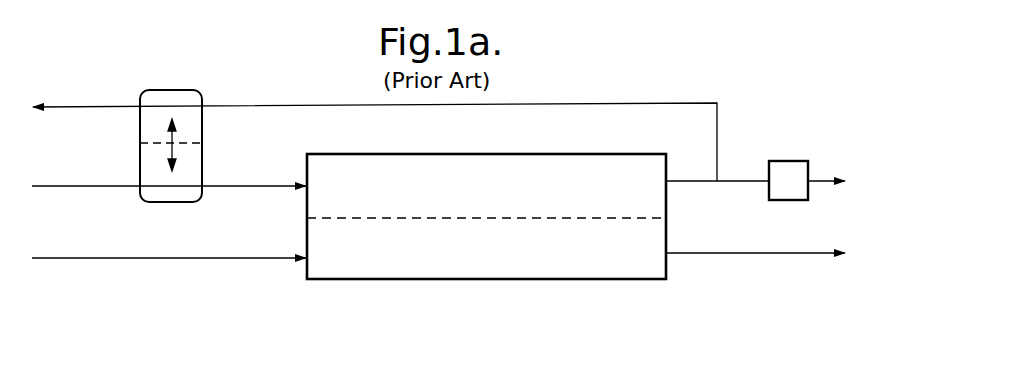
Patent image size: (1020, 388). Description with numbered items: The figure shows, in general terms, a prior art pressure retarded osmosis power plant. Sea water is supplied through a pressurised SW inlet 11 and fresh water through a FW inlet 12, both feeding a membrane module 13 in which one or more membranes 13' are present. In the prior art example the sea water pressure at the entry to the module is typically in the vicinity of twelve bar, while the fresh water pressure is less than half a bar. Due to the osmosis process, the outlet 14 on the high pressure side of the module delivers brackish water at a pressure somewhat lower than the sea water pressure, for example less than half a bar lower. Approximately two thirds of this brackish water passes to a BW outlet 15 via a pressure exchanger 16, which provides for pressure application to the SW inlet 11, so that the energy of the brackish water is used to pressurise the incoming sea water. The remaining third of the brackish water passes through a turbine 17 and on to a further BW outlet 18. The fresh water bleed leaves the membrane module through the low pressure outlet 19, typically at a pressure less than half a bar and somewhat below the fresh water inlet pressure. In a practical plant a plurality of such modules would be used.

The pressurised SW inlet 11 is at (100, 187).
The FW inlet 12 is at (118, 259).
The membrane module 13 is at (486, 202).
The membrane 13' is at (631, 295).
The outlet on the high pressure side 14 is at (688, 182).
The BW outlet 15 is at (106, 107).
The pressure exchanger 16 is at (203, 128).
The turbine 17 is at (793, 200).
The BW outlet 18 is at (822, 180).
The low pressure outlet 19 is at (787, 254).